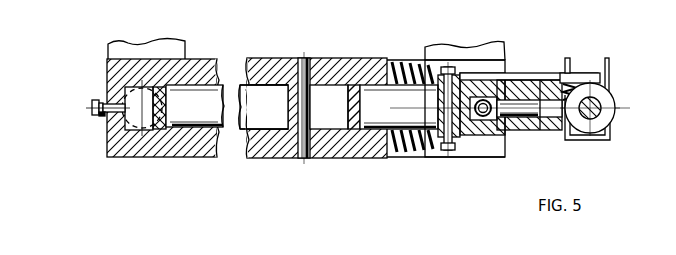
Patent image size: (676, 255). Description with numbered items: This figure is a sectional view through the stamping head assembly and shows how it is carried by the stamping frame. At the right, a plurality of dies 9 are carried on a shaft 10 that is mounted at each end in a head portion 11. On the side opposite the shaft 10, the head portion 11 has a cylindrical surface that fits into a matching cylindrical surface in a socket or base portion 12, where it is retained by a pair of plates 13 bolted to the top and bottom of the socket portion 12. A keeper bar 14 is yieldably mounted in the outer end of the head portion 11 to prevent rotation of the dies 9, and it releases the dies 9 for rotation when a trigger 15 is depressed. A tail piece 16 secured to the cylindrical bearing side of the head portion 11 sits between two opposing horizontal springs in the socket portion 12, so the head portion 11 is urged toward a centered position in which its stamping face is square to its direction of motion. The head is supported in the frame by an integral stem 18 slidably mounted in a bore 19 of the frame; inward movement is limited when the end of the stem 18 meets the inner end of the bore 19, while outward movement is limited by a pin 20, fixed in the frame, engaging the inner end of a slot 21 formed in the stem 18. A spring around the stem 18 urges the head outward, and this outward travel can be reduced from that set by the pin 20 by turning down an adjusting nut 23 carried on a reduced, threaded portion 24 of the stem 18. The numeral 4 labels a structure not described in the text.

The support block 4 is at (148, 50).
The dies 9 is at (601, 96).
The shaft 10 is at (601, 107).
The head portion 11 is at (520, 87).
The socket or base portion 12 is at (470, 95).
The plates 13 is at (490, 78).
The keeper bar 14 is at (585, 135).
The trigger 15 is at (608, 64).
The tail piece 16 is at (473, 128).
The stem 18 is at (175, 103).
The bore 19 is at (125, 92).
The pin 20 is at (305, 60).
The slot 21 is at (322, 90).
The adjusting nut 23 is at (101, 114).
The reduced, threaded portion 24 is at (92, 106).